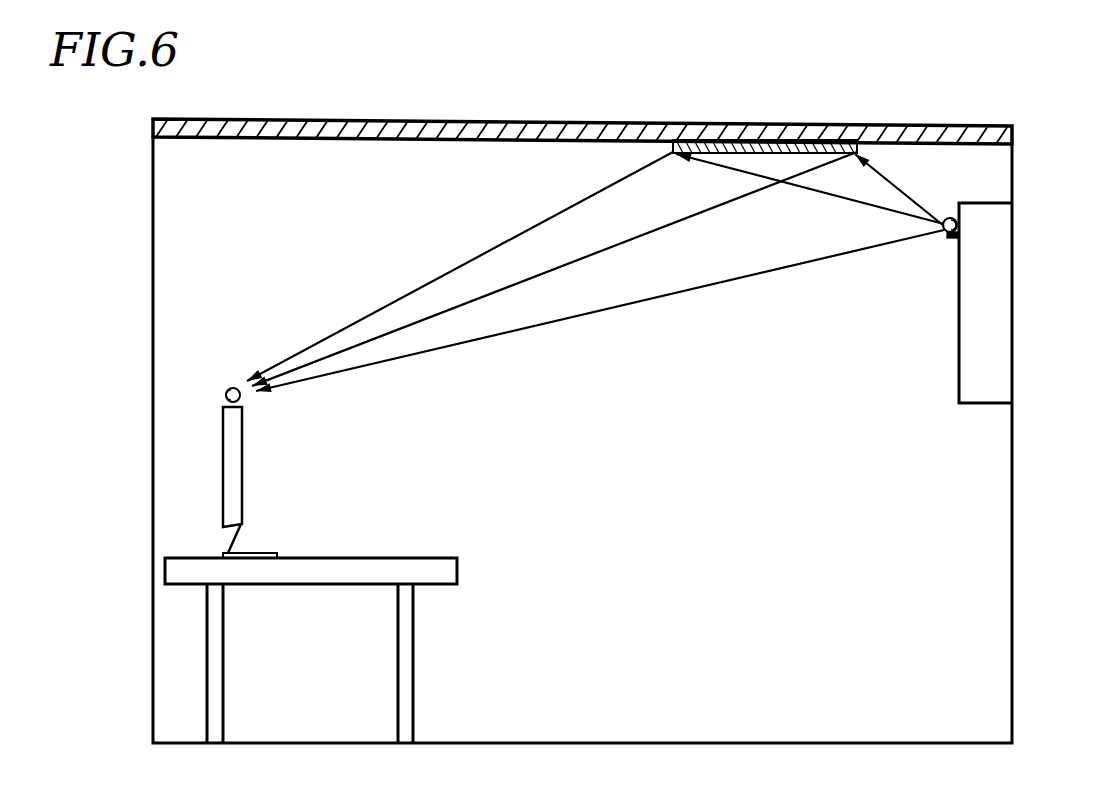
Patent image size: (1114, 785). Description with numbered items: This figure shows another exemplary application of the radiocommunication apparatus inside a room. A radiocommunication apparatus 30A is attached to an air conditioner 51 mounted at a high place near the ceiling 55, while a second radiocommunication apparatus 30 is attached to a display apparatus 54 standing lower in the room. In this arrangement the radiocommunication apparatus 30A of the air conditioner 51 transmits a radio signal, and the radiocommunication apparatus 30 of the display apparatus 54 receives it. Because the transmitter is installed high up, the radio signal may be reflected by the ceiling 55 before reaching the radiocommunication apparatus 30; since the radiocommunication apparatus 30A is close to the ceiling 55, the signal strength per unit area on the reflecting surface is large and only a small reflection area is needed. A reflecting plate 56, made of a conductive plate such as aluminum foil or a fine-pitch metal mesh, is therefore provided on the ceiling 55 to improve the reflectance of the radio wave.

The radiocommunication apparatus 30 is at (232, 386).
The radiocommunication apparatus 30A is at (947, 220).
The air conditioner 51 is at (995, 371).
The display apparatus 54 is at (243, 478).
The ceiling 55 is at (575, 130).
The reflecting plate 56 is at (776, 131).